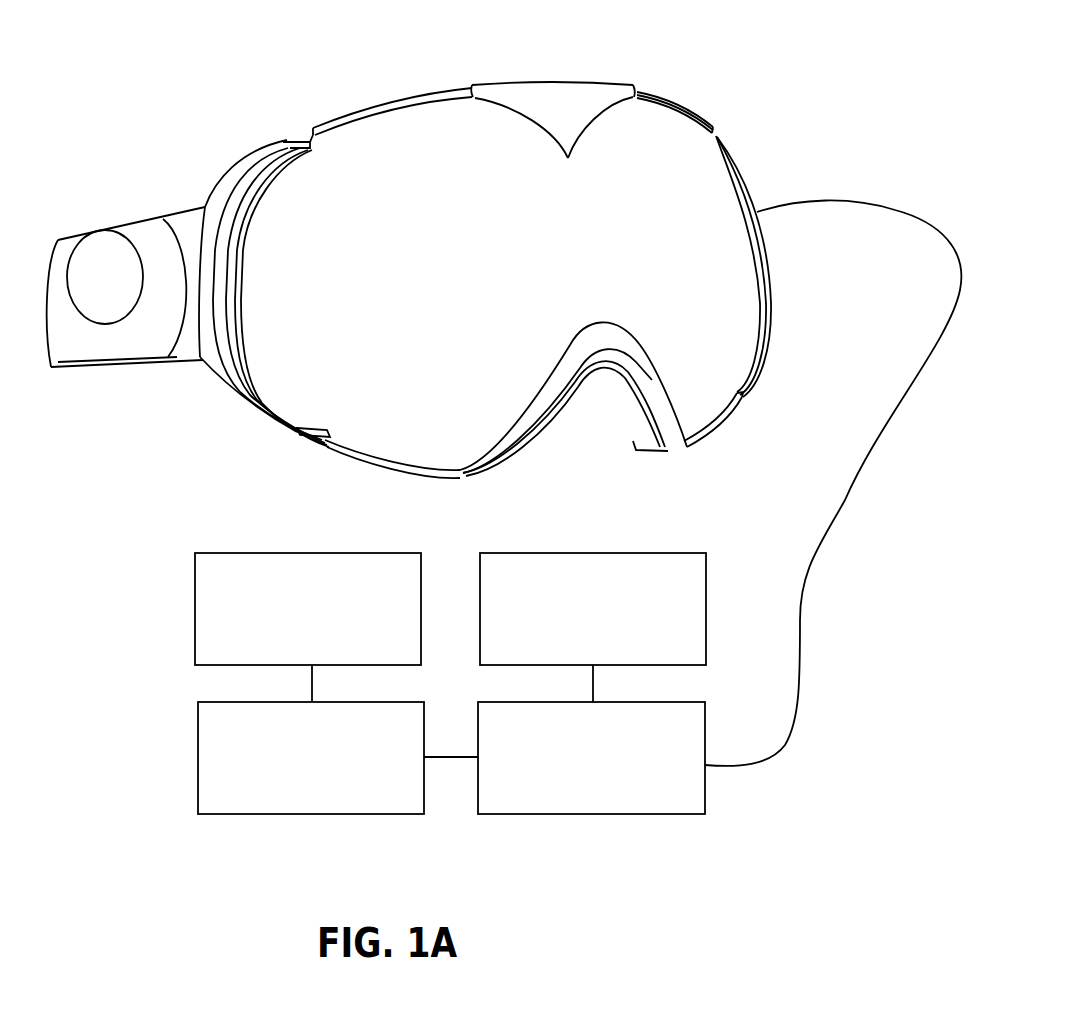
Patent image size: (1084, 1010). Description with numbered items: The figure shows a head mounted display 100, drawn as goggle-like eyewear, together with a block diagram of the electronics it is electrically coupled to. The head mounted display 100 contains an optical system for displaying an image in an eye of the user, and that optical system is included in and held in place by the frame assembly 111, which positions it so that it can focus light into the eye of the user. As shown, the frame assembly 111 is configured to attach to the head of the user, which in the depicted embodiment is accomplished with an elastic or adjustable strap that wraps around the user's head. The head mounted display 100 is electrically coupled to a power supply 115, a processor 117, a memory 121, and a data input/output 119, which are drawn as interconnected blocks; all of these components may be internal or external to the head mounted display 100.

The head mounted display 100 is at (343, 40).
The frame assembly 111 is at (390, 155).
The power supply 115 is at (613, 637).
The processor 117 is at (612, 787).
The data input/output 119 is at (384, 637).
The memory 121 is at (390, 772).